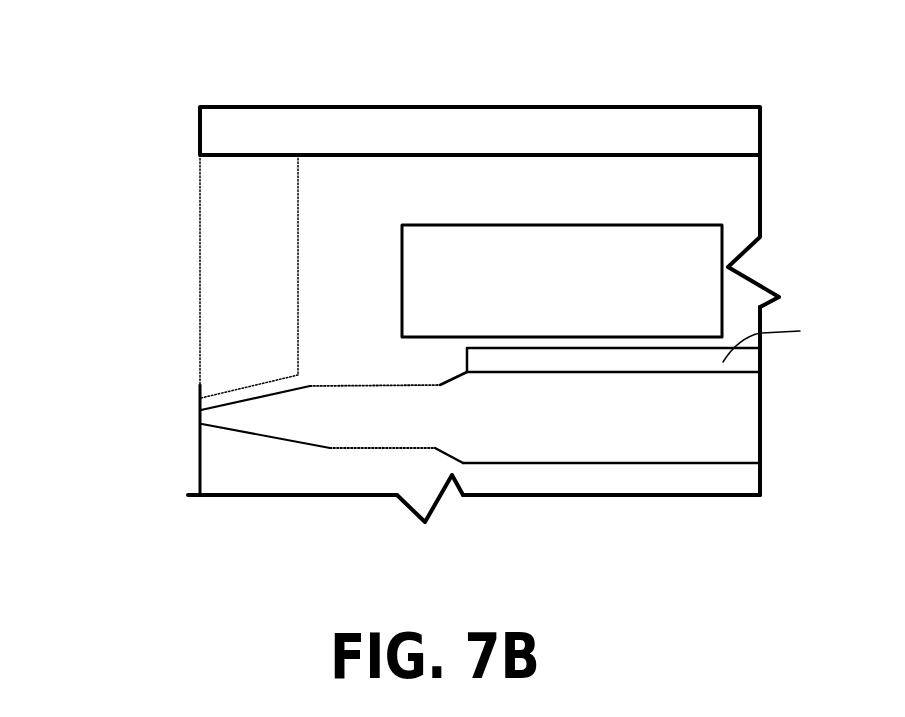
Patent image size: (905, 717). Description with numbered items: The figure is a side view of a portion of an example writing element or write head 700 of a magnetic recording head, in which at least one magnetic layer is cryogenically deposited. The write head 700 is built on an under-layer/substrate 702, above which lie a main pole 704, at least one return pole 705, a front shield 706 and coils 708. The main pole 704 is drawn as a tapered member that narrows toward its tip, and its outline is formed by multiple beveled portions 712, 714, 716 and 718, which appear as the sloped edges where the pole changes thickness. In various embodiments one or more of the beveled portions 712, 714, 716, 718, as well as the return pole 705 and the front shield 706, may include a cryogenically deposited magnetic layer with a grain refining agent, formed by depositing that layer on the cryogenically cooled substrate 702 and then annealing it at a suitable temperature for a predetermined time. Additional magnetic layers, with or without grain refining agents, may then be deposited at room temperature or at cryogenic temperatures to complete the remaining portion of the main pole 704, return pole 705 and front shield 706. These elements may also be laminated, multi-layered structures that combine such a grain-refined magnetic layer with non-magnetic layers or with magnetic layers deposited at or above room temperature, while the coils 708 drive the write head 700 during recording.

The write head 700 is at (511, 66).
The under-layer/substrate 702 is at (288, 463).
The main pole 704 is at (513, 431).
The return pole 705 is at (513, 144).
The front shield 706 is at (227, 255).
The coils 708 is at (582, 291).
The beveled portion 712 is at (238, 433).
The beveled portion 714 is at (252, 398).
The beveled portion 716 is at (447, 455).
The beveled portion 718 is at (440, 385).